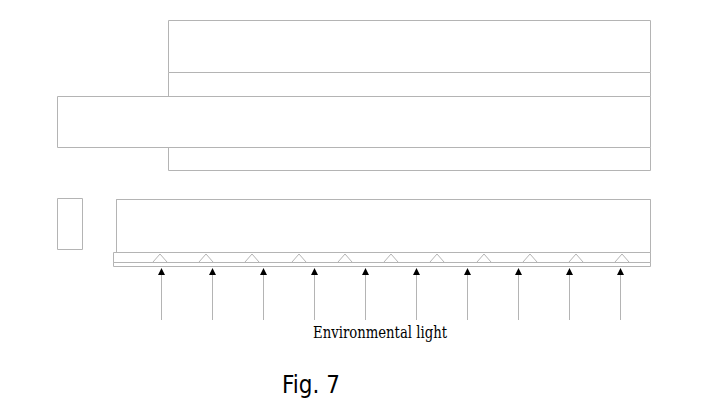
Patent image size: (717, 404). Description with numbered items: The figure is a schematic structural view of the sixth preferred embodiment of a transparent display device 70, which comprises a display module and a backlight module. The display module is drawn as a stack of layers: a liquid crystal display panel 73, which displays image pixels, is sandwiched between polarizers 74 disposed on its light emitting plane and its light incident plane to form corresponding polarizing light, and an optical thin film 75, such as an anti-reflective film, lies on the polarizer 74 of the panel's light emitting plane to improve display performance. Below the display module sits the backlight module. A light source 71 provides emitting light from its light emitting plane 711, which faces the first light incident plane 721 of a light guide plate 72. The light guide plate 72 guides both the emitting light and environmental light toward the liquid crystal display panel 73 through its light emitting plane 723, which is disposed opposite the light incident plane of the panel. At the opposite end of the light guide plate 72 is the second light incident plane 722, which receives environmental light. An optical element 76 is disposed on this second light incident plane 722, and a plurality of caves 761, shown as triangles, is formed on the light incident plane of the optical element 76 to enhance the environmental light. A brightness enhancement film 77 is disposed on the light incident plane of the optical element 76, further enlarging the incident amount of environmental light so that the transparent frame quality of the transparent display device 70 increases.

The transparent display device 70 is at (77, 65).
The light source 71 is at (57, 222).
The light emitting plane of the light source 711 is at (84, 223).
The light guide plate 72 is at (651, 223).
The first light incident plane 721 is at (115, 223).
The second light incident plane 722 is at (623, 253).
The light emitting plane of the light guide plate 723 is at (116, 199).
The liquid crystal display panel 73 is at (651, 120).
The polarizers 74 is at (651, 83).
The optical thin film 75 is at (651, 45).
The optical element 76 is at (651, 257).
The brightness enhancement film 77 is at (640, 266).
The caves 761 is at (158, 262).